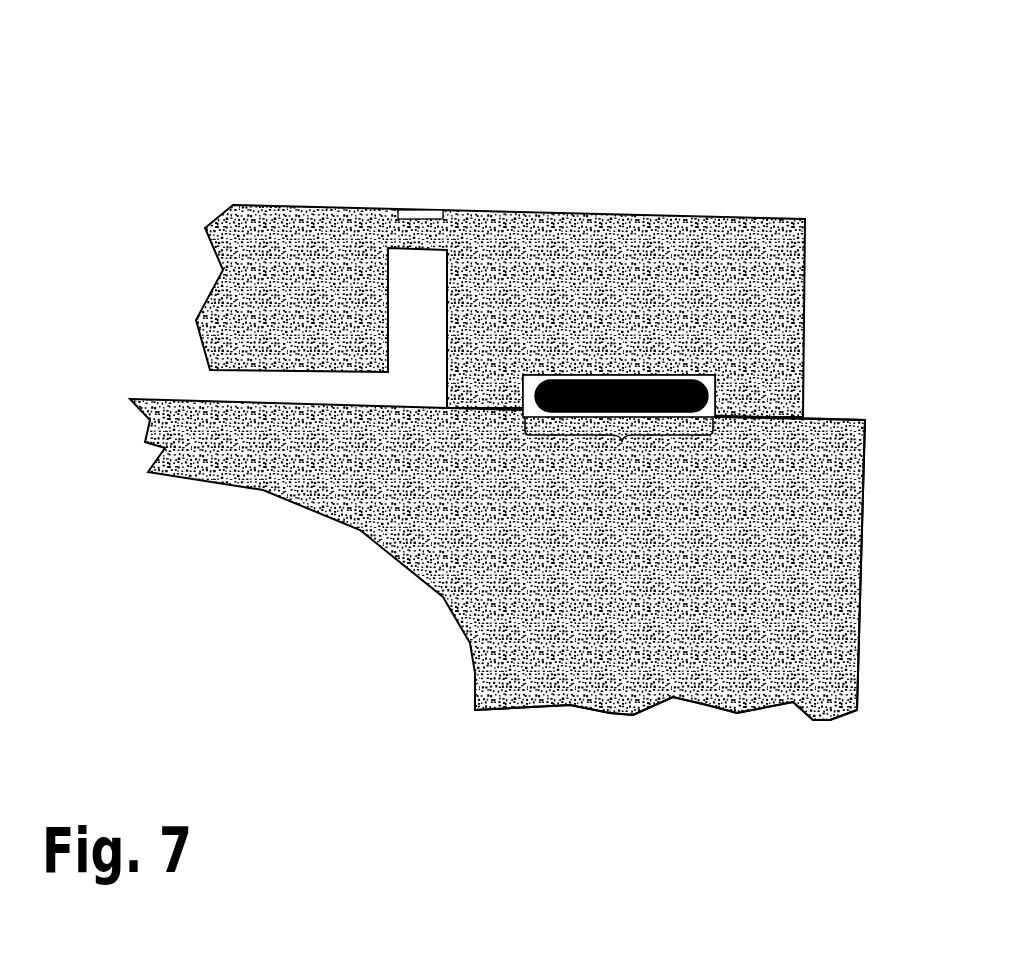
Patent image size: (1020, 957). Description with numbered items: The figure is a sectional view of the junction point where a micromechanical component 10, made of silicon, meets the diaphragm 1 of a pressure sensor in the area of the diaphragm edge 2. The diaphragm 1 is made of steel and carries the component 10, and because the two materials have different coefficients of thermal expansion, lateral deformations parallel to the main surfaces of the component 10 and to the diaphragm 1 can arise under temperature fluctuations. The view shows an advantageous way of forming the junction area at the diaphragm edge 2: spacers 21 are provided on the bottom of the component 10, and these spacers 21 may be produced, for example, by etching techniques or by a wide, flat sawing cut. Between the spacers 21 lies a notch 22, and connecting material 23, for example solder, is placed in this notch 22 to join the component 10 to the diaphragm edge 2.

The micromechanical component 10 is at (440, 168).
The diaphragm 1 is at (198, 465).
The diaphragm edge 2 is at (675, 683).
The spacers 21 is at (829, 563).
The notch 22 is at (619, 459).
The connecting material 23 is at (705, 381).